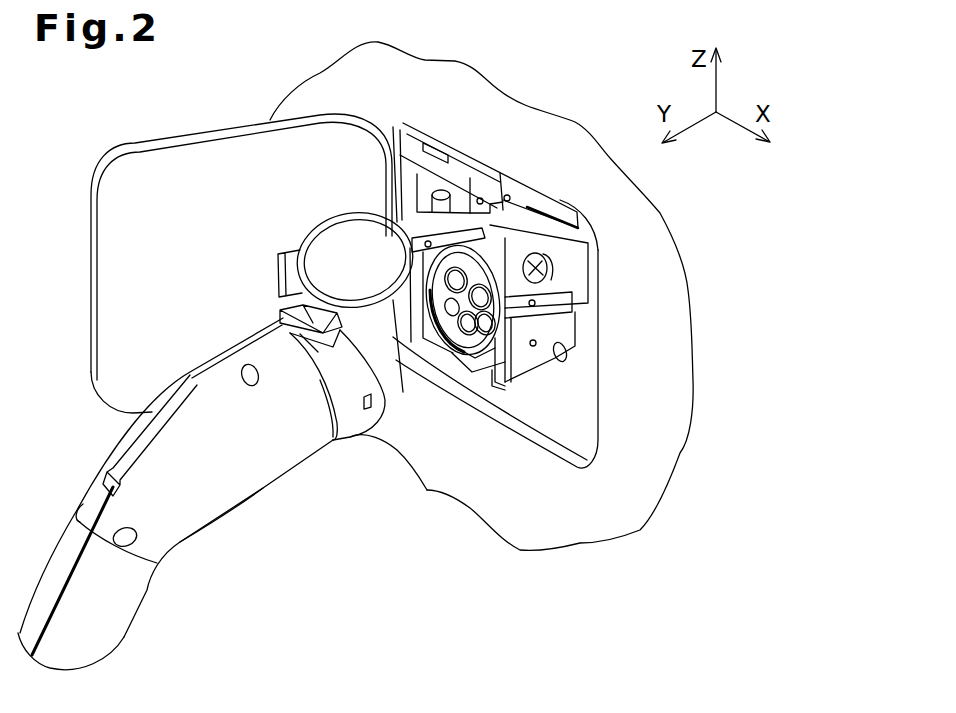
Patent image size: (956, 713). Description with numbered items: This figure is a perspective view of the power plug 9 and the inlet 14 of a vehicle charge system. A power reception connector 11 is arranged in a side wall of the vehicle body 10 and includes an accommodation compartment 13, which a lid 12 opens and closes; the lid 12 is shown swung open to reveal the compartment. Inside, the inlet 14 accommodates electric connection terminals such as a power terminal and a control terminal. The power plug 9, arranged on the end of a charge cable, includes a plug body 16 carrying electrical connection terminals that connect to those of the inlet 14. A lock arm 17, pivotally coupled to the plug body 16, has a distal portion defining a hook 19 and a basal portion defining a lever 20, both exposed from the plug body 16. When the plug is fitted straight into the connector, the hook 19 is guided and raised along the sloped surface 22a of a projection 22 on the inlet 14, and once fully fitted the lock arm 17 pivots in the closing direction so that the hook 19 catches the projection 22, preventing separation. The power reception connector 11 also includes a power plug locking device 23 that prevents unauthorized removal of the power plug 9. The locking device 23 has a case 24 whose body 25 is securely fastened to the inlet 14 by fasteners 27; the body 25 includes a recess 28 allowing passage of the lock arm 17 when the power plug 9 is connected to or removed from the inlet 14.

The power plug 9 is at (299, 460).
The vehicle body 10 is at (682, 453).
The power reception connector 11 is at (582, 153).
The lid 12 is at (170, 168).
The accommodation compartment 13 is at (597, 398).
The inlet 14 is at (527, 247).
The plug body 16 is at (245, 490).
The lock arm 17 is at (285, 309).
The hook 19 is at (328, 334).
The lever 20 is at (133, 422).
The projection 22 is at (532, 247).
The sloped surface 22a is at (392, 214).
The power plug locking device 23 is at (512, 218).
The case 24 is at (485, 156).
The body 25 is at (443, 164).
The fasteners 27 is at (550, 262).
The recess 28 is at (550, 243).